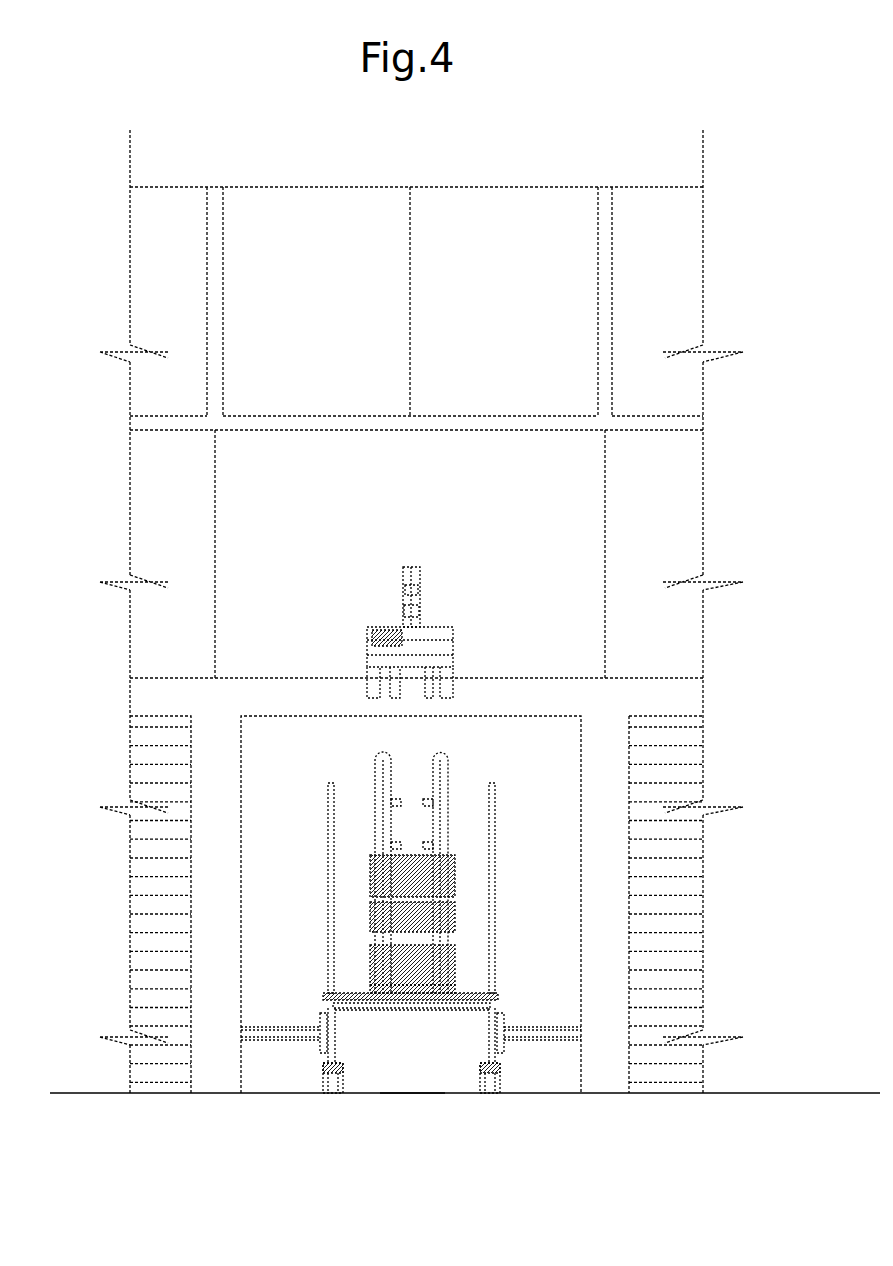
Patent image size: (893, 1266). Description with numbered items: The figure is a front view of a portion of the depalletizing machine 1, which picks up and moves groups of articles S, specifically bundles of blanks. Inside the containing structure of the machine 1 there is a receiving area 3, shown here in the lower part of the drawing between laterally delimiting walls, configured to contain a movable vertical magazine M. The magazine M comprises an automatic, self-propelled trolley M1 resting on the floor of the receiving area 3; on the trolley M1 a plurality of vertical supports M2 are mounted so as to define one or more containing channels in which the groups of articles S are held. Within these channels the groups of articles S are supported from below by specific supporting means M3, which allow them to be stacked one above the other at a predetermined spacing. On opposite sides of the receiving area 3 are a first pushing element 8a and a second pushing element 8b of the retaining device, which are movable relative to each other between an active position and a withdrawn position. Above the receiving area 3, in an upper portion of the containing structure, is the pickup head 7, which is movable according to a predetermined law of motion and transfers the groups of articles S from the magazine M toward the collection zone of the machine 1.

The depalletizing machine 1 is at (652, 129).
The receiving area 3 is at (412, 1062).
The pickup head 7 is at (445, 615).
The first pushing element 8a is at (270, 1041).
The second pushing element 8b is at (548, 1041).
The movable magazine M is at (407, 942).
The automatic, self-propelled trolley M1 is at (336, 1032).
The vertical supports M2 is at (448, 770).
The supporting means M3 is at (395, 799).
The groups of articles S is at (462, 962).